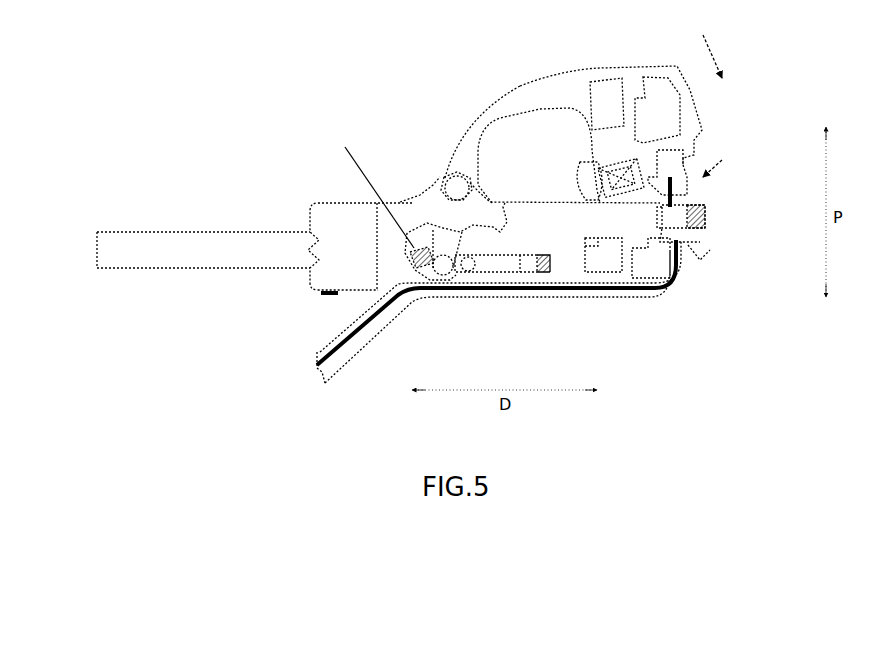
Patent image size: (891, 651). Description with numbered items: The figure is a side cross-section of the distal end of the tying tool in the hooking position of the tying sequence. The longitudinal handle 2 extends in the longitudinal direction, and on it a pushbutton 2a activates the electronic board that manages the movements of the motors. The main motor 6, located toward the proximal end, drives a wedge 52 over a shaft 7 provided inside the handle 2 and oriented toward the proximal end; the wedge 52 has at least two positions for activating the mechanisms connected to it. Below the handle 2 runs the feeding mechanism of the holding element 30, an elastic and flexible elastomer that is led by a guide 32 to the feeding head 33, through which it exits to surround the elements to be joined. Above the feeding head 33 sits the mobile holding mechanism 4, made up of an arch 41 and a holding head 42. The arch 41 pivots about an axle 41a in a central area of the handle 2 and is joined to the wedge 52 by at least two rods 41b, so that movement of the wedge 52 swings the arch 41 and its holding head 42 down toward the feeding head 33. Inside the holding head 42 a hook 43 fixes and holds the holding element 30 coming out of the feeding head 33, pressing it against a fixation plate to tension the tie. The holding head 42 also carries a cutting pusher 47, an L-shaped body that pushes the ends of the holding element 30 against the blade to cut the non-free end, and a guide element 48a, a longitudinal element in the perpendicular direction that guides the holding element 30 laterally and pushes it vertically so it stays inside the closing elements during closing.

The handle 2 is at (350, 212).
The pushbutton 2a is at (353, 294).
The holding mechanism 4 is at (487, 73).
The main motor 6 is at (185, 240).
The shaft 7 is at (372, 189).
The holding element 30 is at (585, 300).
The guide 32 is at (368, 332).
The feeding head 33 is at (703, 241).
The arch 41 is at (540, 93).
The axle 41a is at (440, 178).
The rods 41b is at (462, 290).
The holding head 42 is at (660, 100).
The hook 43 is at (674, 183).
The cutting pusher 47 is at (568, 203).
The guide element 48a is at (600, 183).
The wedge 52 is at (498, 272).